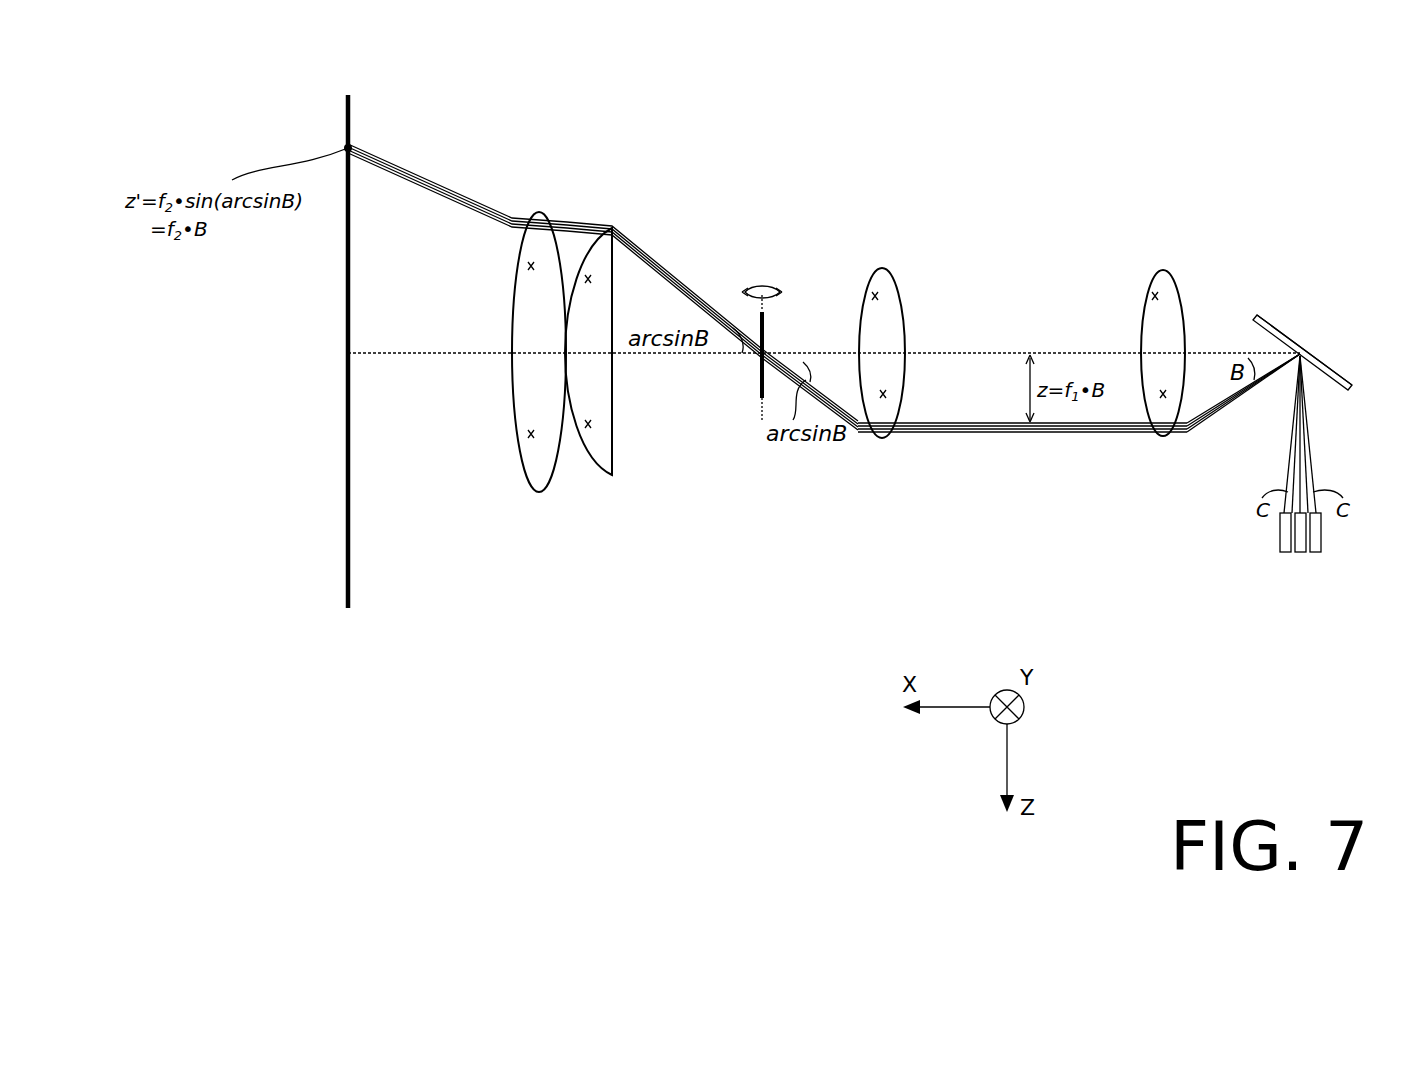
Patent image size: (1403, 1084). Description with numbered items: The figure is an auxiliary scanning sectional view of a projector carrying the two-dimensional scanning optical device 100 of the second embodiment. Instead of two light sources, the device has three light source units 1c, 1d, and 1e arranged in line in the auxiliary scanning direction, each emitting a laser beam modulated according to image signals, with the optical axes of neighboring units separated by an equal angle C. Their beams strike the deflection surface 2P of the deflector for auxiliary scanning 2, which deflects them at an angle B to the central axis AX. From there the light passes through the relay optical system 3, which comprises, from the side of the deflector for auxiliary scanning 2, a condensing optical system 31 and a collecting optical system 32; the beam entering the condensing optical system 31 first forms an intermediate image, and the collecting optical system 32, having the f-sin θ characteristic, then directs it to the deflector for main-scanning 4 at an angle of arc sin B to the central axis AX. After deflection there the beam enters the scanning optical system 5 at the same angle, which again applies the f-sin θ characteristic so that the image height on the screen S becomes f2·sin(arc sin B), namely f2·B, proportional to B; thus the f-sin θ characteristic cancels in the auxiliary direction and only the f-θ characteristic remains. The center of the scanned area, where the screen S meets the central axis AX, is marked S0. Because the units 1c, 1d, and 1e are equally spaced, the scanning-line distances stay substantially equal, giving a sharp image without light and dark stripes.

The two-dimensional scanning optical device 100 is at (700, 645).
The light source unit 1c is at (1283, 553).
The light source unit 1d is at (1300, 553).
The light source unit 1e is at (1318, 553).
The deflector for auxiliary scanning 2 is at (1284, 322).
The deflection surface 2P is at (1332, 383).
The relay optical system 3 is at (1022, 300).
The condensing optical system 31 is at (1145, 332).
The collecting optical system 32 is at (890, 290).
The deflector for main-scanning 4 is at (760, 400).
The scanning optical system 5 is at (614, 212).
The screen S is at (346, 545).
The center of scanned area S0 is at (331, 356).
The central axis AX is at (440, 355).